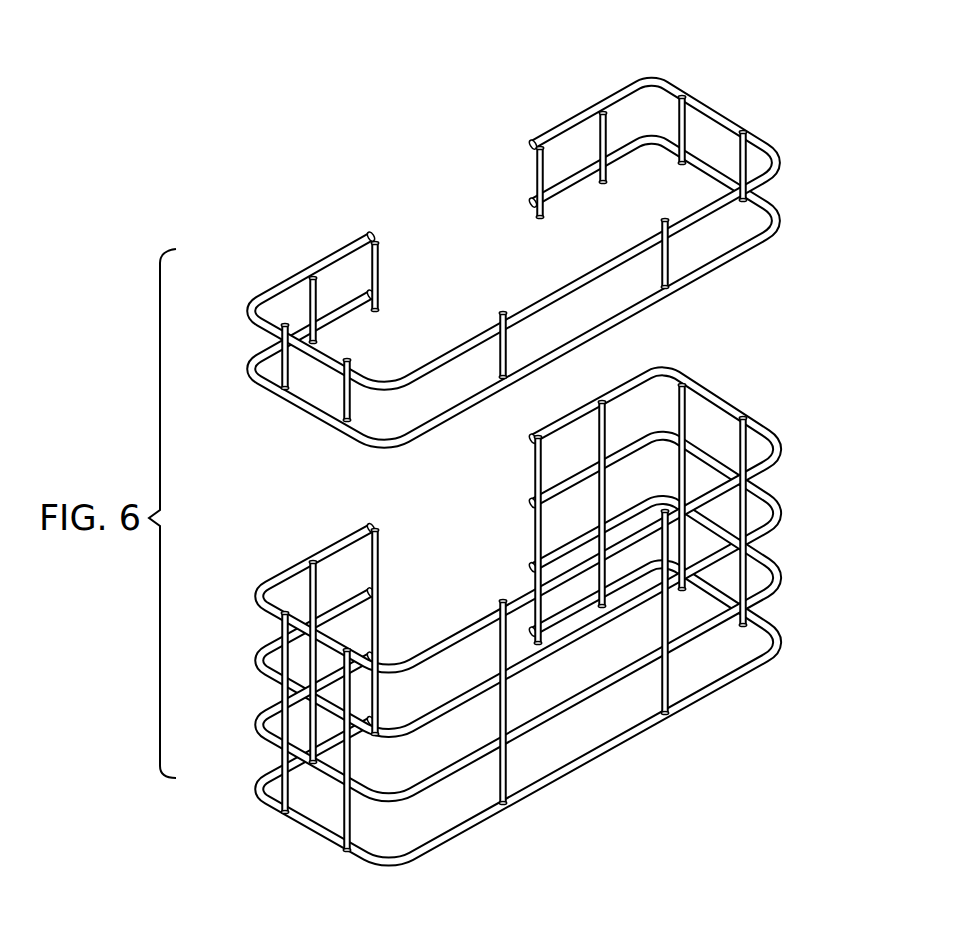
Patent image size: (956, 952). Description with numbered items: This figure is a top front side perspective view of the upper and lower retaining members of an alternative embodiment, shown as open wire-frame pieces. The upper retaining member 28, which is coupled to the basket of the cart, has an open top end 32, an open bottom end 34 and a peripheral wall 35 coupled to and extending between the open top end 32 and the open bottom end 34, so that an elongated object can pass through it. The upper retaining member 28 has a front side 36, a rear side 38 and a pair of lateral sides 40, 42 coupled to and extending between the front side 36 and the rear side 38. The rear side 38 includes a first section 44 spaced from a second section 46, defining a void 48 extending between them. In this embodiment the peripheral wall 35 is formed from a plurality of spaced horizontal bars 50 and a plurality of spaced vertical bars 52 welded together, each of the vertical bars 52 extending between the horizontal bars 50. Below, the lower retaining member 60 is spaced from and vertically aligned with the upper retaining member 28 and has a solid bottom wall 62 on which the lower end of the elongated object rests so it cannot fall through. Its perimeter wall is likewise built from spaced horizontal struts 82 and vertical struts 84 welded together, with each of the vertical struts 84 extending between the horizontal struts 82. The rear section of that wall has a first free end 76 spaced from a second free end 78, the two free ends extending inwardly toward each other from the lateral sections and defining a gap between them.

The upper retaining member 28 is at (781, 152).
The open top end 32 is at (652, 79).
The open bottom end 34 is at (707, 288).
The peripheral wall 35 is at (757, 112).
The front side 36 is at (385, 416).
The rear side 38 is at (546, 129).
The lateral side 40 is at (269, 405).
The lateral side 42 is at (706, 91).
The first section 44 is at (370, 268).
The second section 46 is at (585, 112).
The void 48 is at (466, 219).
The horizontal bars 50 is at (478, 355).
The vertical bars 52 is at (315, 297).
The lower retaining member 60 is at (785, 438).
The bottom wall 62 is at (398, 852).
The first free end 76 is at (380, 530).
The second free end 78 is at (530, 445).
The horizontal struts 82 is at (260, 610).
The vertical struts 84 is at (311, 748).